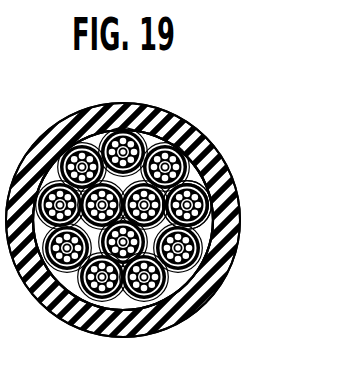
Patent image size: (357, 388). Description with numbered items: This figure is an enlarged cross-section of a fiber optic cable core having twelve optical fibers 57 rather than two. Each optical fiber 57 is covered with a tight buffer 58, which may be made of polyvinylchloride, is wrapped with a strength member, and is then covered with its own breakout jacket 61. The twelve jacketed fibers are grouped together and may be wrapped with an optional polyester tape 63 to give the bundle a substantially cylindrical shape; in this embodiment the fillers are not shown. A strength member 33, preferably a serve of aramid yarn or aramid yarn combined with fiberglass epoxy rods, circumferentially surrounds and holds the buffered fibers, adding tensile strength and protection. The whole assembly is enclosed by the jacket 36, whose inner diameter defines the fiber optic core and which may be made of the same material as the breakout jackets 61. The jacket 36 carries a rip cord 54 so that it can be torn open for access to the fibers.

The jacket 36 is at (133, 103).
The rip cord 54 is at (62, 292).
The breakout jacket 61 is at (205, 188).
The polyester tape 63 is at (197, 160).
The tight buffer 58 is at (209, 263).
The strength member 33 is at (195, 267).
The optical fiber 57 is at (205, 216).